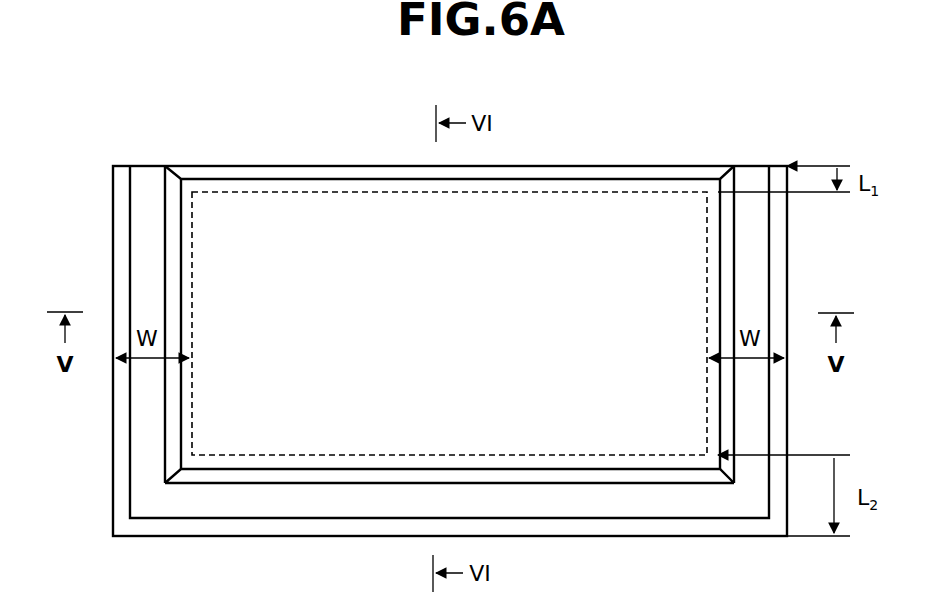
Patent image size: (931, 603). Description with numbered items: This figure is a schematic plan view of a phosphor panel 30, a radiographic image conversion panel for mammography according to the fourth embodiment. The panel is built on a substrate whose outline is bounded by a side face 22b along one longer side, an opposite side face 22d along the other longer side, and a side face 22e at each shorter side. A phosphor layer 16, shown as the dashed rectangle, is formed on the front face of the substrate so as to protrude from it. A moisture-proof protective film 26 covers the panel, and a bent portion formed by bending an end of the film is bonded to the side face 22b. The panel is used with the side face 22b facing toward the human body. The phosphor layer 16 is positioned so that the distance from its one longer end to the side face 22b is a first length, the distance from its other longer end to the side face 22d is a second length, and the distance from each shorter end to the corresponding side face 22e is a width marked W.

The phosphor layer 16 is at (338, 222).
The side face having one longer side of the substrate 22b is at (608, 166).
The side face of the substrate 22d is at (608, 536).
The side face of the substrate 22e is at (113, 418).
The moisture-proof protective film 26 is at (241, 502).
The phosphor panel 30 is at (698, 97).